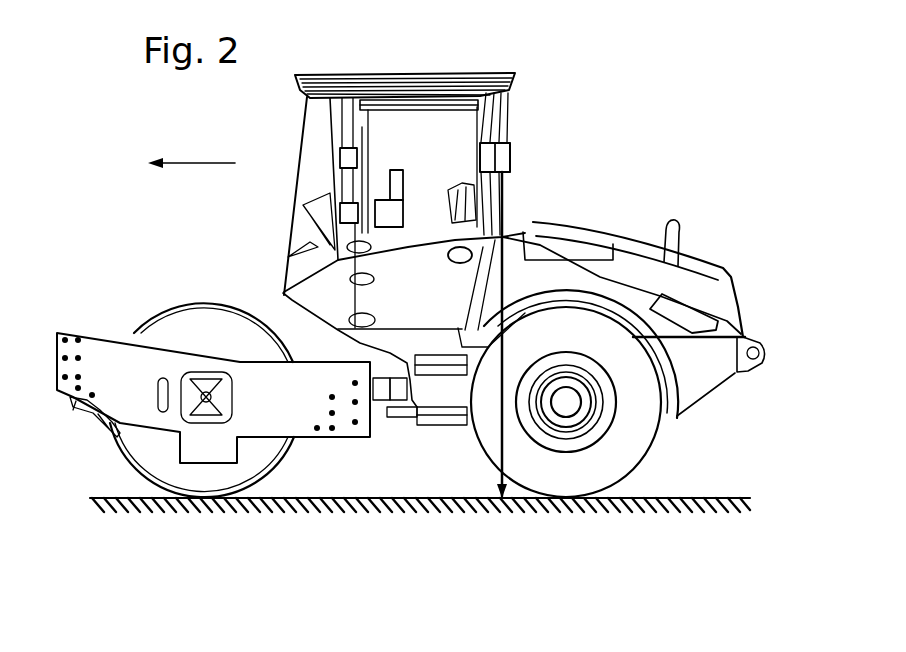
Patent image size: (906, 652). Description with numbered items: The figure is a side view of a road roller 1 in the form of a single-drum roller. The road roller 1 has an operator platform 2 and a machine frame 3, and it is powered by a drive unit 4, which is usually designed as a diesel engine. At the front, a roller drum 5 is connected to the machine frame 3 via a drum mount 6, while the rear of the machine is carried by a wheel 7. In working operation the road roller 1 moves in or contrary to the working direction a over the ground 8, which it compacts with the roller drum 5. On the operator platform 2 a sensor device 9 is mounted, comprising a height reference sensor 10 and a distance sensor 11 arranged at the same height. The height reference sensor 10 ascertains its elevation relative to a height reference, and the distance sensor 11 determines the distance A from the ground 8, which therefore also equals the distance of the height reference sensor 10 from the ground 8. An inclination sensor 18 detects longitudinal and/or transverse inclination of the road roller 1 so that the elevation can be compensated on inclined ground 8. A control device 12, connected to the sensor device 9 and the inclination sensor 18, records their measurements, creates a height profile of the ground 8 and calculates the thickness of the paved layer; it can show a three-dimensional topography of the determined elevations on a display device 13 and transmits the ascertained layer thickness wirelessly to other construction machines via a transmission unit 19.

The road roller 1 is at (578, 152).
The operator platform 2 is at (388, 135).
The machine frame 3 is at (578, 242).
The drive unit 4 is at (635, 297).
The roller drum 5 is at (165, 465).
The drum mount 6 is at (143, 365).
The wheel 7 is at (565, 468).
The ground 8 is at (318, 503).
The sensor device 9 is at (510, 120).
The height reference sensor 10 is at (493, 157).
The distance sensor 11 is at (500, 147).
The control device 12 is at (398, 222).
The display device 13 is at (398, 180).
The inclination sensor 18 is at (350, 213).
The transmission unit 19 is at (348, 157).
The distance from the ground A is at (495, 420).
The working direction a is at (181, 163).